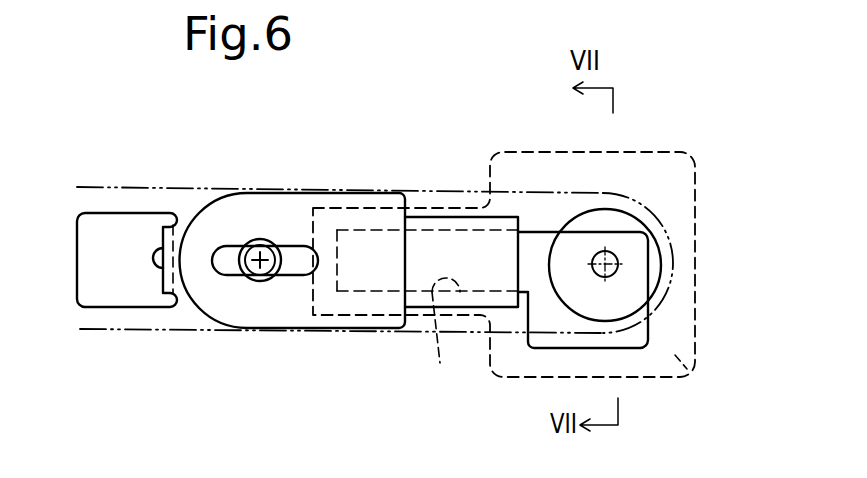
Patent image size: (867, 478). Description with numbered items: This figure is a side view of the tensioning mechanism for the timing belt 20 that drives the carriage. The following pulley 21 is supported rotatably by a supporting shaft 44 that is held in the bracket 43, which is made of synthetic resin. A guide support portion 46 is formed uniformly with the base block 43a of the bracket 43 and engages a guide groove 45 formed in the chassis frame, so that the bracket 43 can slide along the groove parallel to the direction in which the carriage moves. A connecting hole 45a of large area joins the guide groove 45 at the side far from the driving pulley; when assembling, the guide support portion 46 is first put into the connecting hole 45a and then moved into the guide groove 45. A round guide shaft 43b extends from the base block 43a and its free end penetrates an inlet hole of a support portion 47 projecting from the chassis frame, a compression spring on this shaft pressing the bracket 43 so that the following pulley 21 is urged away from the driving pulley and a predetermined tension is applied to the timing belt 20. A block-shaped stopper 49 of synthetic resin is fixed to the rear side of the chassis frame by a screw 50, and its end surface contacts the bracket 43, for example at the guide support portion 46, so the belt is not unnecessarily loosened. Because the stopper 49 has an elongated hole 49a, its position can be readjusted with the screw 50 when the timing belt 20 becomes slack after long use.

The timing belt 20 is at (194, 188).
The following pulley 21 is at (625, 220).
The bracket 43 is at (513, 150).
The base block 43a is at (693, 377).
The guide shaft 43b is at (150, 252).
The supporting shaft 44 is at (618, 272).
The guide groove 45 is at (440, 363).
The connecting hole 45a is at (556, 348).
The guide support portion 46 is at (448, 240).
The support portion 47 is at (160, 292).
The stopper 49 is at (272, 212).
The elongated hole 49a is at (228, 272).
The screw 50 is at (264, 273).